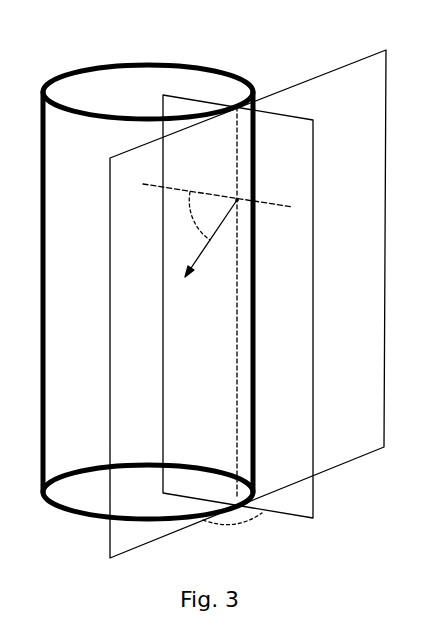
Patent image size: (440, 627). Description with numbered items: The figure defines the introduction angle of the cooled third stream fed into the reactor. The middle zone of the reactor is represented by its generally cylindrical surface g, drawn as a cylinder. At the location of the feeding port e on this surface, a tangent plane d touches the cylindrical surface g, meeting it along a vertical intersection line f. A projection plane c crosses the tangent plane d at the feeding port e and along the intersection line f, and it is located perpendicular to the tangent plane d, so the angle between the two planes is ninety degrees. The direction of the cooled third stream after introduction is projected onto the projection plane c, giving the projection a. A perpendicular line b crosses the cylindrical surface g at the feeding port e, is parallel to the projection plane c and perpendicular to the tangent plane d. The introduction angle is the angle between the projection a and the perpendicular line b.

The projection of the direction of the cooled third stream a is at (208, 238).
The perpendicular line b is at (224, 203).
The projection plane c is at (238, 306).
The tangent plane d is at (248, 304).
The location of the feeding port e is at (228, 188).
The intersection line f is at (229, 302).
The generally cylindrical surface of the middle zone g is at (148, 292).